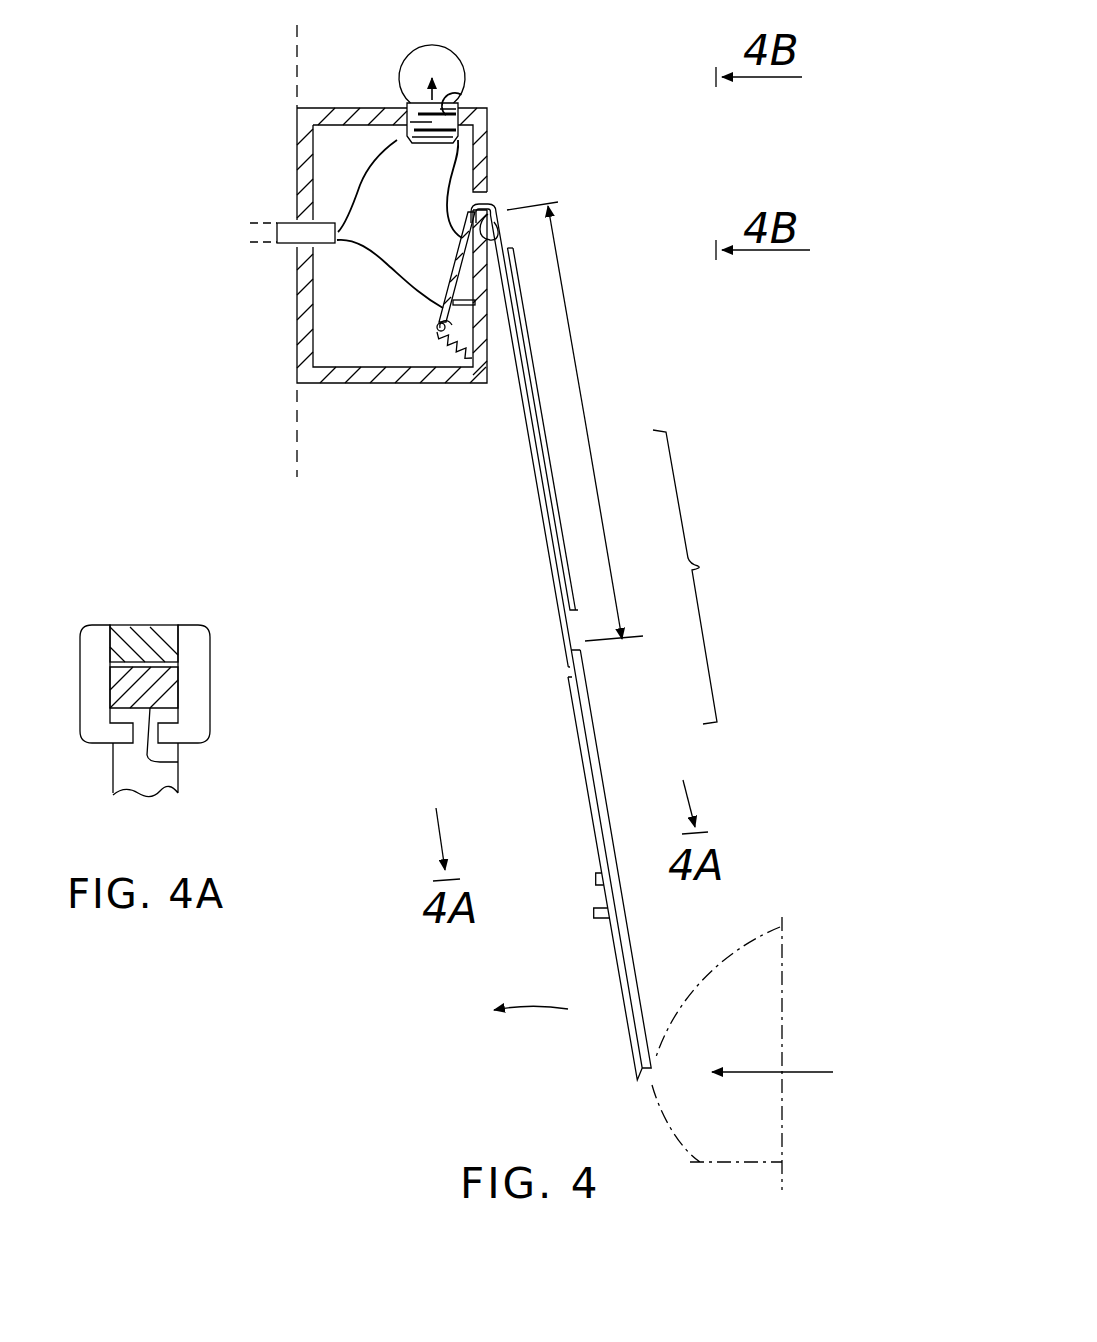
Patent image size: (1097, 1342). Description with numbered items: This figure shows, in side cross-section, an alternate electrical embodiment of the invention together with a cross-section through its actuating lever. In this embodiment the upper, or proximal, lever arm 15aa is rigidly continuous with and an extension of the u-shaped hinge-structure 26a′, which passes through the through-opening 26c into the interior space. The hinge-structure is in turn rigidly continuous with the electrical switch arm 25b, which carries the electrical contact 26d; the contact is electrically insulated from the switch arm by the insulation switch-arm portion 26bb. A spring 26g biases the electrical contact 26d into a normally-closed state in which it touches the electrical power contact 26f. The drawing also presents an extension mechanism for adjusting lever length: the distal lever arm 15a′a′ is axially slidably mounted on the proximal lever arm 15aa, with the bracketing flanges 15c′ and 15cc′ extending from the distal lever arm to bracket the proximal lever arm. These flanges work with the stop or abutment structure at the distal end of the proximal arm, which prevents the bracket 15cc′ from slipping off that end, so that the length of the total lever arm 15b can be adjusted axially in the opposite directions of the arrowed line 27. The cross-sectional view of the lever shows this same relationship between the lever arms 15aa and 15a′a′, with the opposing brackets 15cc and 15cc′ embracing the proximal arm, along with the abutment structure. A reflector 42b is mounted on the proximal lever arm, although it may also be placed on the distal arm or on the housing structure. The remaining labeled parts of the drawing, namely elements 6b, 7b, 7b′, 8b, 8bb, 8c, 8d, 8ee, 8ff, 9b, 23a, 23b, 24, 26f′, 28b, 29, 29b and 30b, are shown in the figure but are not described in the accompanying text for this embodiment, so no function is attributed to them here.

In FIG. 4, the release mechanism assembly 6b is at (192, 152).
In FIG. 4, the housing 7b is at (355, 108).
In FIG. 4, the housing bottom wall 7b′ is at (297, 348).
In FIG. 4, the threaded stem 8b is at (460, 130).
In FIG. 4, the stem lower threads 8bb is at (412, 128).
In FIG. 4, the stem body 8c is at (408, 116).
In FIG. 4, the knob collar 8d is at (466, 97).
In FIG. 4, the GO knob 8ee is at (432, 46).
In FIG. 4, the knob indicator arrow 8ff is at (438, 83).
In FIG. 4, the shaft 9b is at (288, 220).
In FIG. 4, the lower lever arm 23a is at (390, 257).
In FIG. 4, the right lever arm 23b is at (452, 165).
In FIG. 4, the left lever arm 24 is at (365, 184).
In FIG. 4, the electrical switch arm 25b is at (463, 232).
In FIG. 4, the u-shaped hinge-structure 26a′ is at (496, 205).
In FIG. 4, the insulation switch-arm portion 26bb is at (452, 270).
In FIG. 4, the through-opening 26c is at (487, 200).
In FIG. 4, the electrical contact 26d is at (438, 310).
In FIG. 4, the electrical power contact 26f is at (475, 330).
In FIG. 4, the arm end curl 26f′ is at (440, 330).
In FIG. 4, the spring 26g is at (452, 358).
In FIG. 4, the arrowed line 27 is at (607, 524).
In FIG. 4, the swing direction arrow 28b is at (538, 1015).
In FIG. 4, the swing path 29 is at (705, 1140).
In FIG. 4, the motion direction arrow 29b is at (797, 1072).
In FIG. 4, the center line 30b is at (297, 475).
In FIG. 4, the reflector 42b is at (545, 477).
In FIG. 4, the upper lever arm 15aa is at (545, 523).
In FIG. 4A, the upper lever arm 15aa is at (178, 762).
In FIG. 4, the distal lever arm 15a′a′ is at (588, 705).
In FIG. 4A, the distal lever arm 15a′a′ is at (172, 598).
In FIG. 4, the total lever arm 15b is at (707, 577).
In FIG. 4, the bracketing flange 15c′ is at (565, 661).
In FIG. 4A, the bracket 15cc is at (78, 693).
In FIG. 4, the bracketing flange 15cc′ is at (596, 880).
In FIG. 4A, the bracketing flange 15cc′ is at (210, 695).